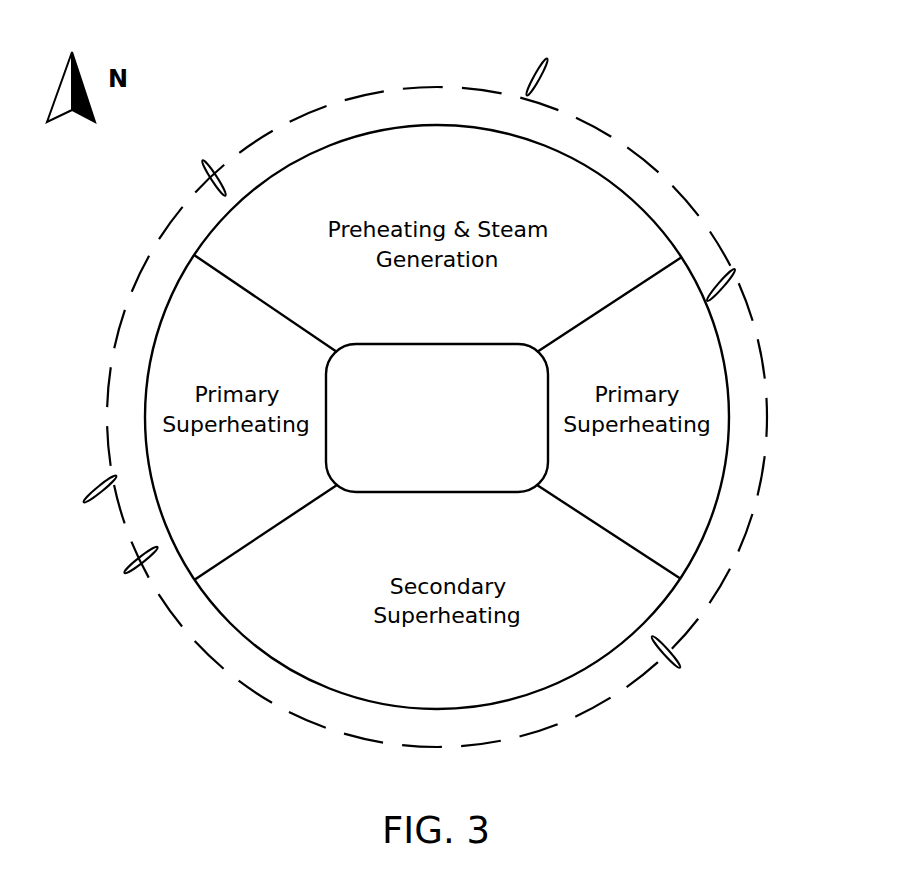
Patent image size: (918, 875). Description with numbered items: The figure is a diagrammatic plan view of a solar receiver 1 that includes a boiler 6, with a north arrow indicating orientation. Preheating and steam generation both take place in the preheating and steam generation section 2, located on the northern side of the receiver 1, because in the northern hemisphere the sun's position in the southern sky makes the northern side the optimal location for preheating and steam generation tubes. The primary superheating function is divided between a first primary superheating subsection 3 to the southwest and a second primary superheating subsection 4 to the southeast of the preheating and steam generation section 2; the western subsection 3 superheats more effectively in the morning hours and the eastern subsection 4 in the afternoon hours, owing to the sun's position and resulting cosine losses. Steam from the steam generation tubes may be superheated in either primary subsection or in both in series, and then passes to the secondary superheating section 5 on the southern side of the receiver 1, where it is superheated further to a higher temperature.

The solar receiver 1 is at (518, 118).
The preheating and steam generation section 2 is at (247, 228).
The first primary superheating subsection 3 is at (190, 522).
The second primary superheating subsection 4 is at (682, 330).
The secondary superheating section 5 is at (620, 610).
The boiler 6 is at (145, 452).